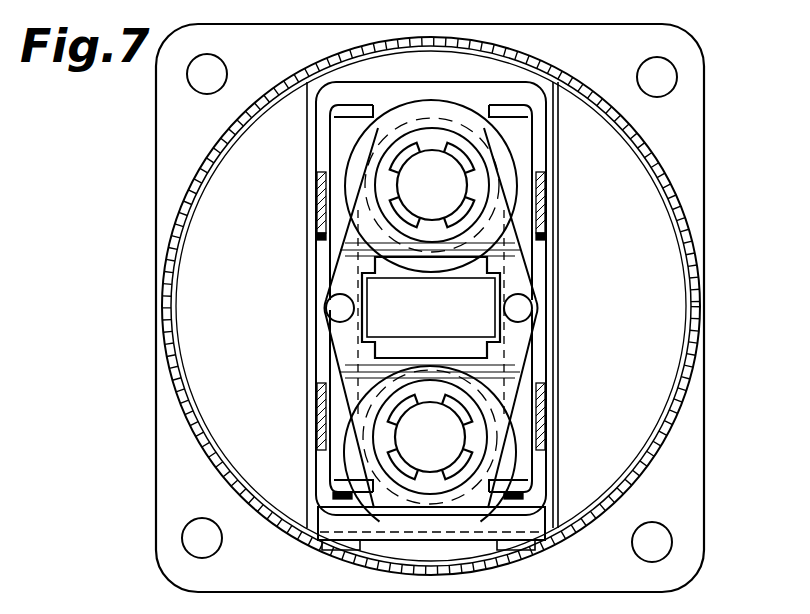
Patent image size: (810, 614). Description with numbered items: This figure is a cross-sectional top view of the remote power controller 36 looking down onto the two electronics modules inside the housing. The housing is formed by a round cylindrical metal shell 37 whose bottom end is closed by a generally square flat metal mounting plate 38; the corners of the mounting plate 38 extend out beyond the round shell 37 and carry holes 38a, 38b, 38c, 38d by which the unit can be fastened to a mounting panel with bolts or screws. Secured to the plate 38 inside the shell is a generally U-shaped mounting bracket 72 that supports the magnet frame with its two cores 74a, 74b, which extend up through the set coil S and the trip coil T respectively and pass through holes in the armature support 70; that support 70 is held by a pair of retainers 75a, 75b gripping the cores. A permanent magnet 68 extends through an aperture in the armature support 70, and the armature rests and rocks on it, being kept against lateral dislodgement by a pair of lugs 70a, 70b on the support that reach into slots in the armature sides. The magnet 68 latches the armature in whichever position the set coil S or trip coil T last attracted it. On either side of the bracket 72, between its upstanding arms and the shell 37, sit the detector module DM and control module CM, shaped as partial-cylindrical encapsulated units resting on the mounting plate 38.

The drive assembly 36 is at (132, 290).
The cylindrical metal shell 37 is at (182, 212).
The mounting plate 38 is at (156, 134).
The mounting hole 38a is at (226, 68).
The mounting hole 38b is at (637, 74).
The mounting hole 38c is at (633, 537).
The mounting hole 38d is at (222, 540).
The permanent magnet 68 is at (487, 330).
The armature support 70 is at (513, 268).
The lug 70a is at (338, 308).
The lug 70b is at (528, 308).
The mounting bracket 72 is at (540, 204).
The core 74a is at (433, 162).
The core 74b is at (440, 452).
The retainer 75a is at (390, 155).
The retainer 75b is at (378, 420).
The set coil S is at (500, 157).
The trip coil T is at (497, 466).
The detector module DM is at (197, 344).
The control module CM is at (668, 350).